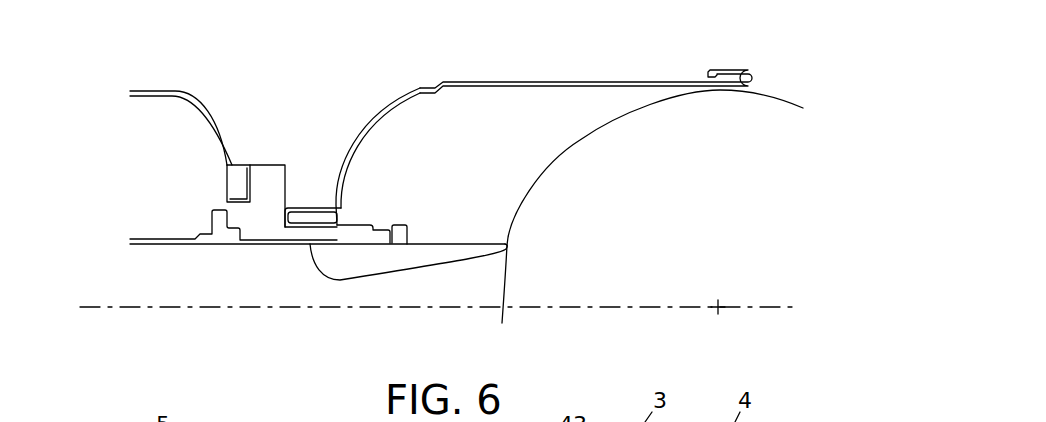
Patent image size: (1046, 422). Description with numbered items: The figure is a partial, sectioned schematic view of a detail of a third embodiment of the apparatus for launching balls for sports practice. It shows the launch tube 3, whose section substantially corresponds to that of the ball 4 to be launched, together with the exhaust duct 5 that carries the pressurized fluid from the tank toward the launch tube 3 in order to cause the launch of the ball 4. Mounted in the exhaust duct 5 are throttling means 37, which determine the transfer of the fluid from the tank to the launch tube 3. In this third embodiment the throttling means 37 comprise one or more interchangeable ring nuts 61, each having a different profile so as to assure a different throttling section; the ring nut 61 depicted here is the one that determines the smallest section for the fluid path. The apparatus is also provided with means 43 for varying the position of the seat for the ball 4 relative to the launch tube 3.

The launch tube 3 is at (643, 87).
The ball 4 is at (583, 197).
The exhaust duct 5 is at (183, 277).
The throttling means 37 is at (300, 278).
The means for varying the position of the seat 43 is at (497, 220).
The interchangeable ring nut 61 is at (376, 262).